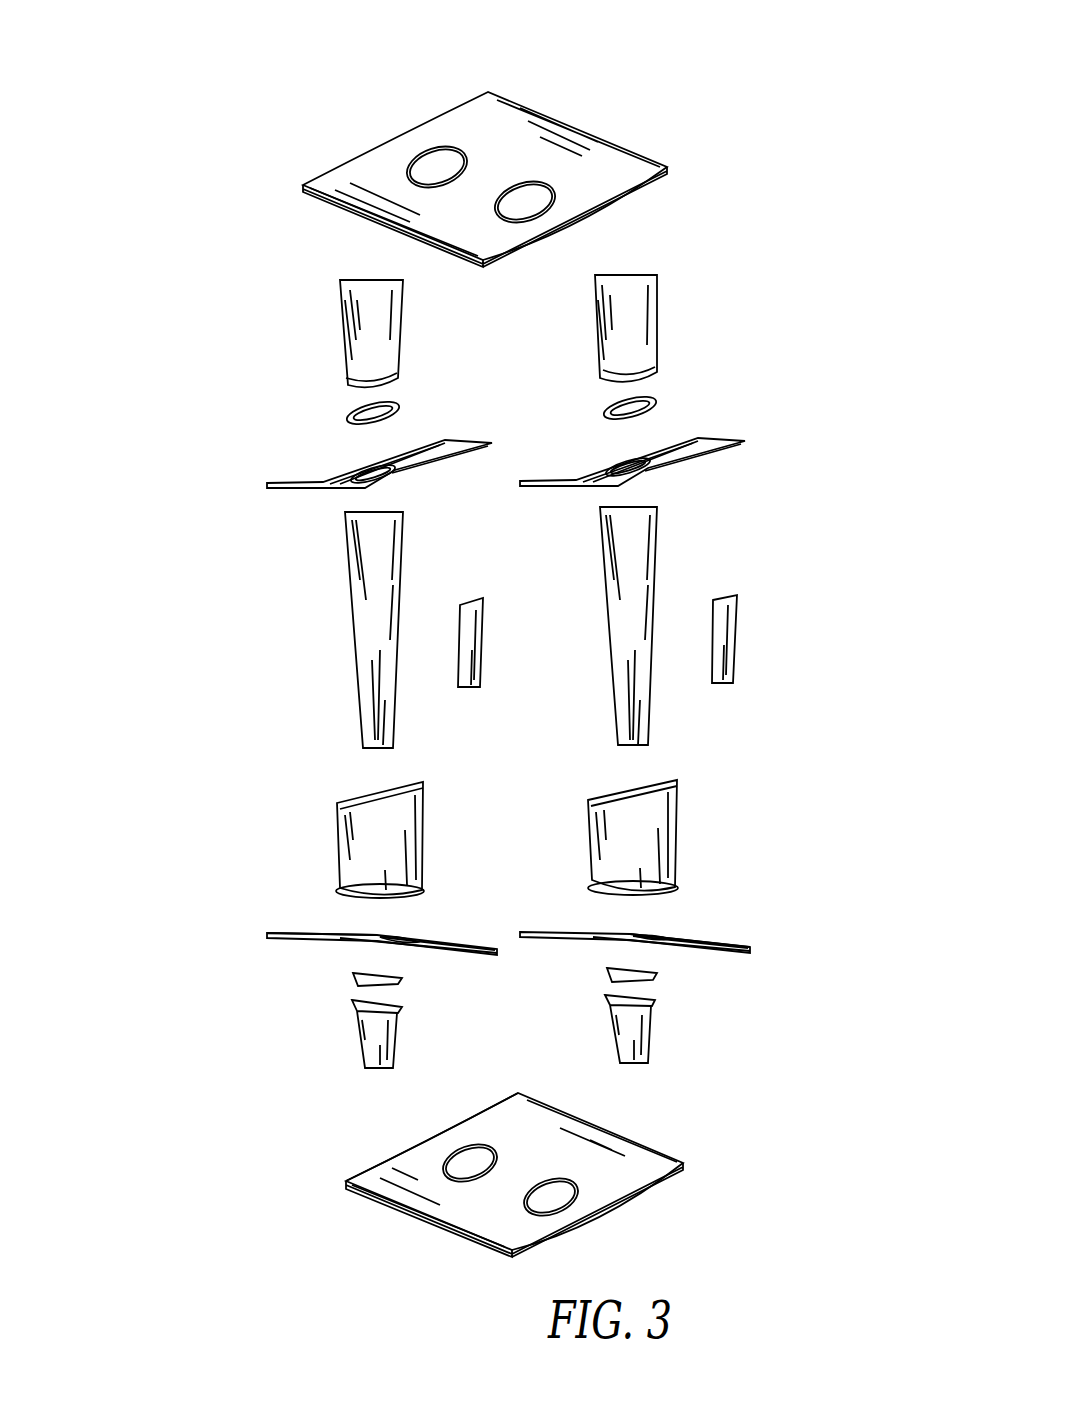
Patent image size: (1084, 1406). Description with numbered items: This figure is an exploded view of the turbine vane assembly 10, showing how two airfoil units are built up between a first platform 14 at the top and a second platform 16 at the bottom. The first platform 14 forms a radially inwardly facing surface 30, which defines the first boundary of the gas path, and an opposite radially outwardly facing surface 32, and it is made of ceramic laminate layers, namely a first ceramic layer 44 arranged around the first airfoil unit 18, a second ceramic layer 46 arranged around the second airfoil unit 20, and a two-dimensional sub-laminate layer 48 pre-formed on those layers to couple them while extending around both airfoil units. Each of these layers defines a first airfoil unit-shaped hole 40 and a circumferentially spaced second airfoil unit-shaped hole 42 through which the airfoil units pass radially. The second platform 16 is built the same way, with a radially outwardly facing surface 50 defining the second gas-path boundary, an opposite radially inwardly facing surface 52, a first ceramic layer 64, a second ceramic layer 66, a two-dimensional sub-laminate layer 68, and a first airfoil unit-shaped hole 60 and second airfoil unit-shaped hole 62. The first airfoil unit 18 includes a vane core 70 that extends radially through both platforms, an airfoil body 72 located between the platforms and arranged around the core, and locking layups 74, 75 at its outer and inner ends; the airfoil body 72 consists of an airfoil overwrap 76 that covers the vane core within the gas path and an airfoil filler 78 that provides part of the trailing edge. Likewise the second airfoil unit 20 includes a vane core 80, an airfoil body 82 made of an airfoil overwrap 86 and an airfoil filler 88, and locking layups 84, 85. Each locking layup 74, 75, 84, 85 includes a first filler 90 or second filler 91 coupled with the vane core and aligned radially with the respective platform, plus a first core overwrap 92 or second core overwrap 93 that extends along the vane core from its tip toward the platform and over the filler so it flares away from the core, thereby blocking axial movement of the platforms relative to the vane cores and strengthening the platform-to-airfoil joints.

The vane assembly 10 is at (227, 100).
The first platform 14 is at (223, 167).
The second platform 16 is at (178, 1185).
The first airfoil unit 18 is at (885, 633).
The second airfoil unit 20 is at (140, 640).
The radially inwardly facing surface 30 is at (418, 466).
The radially outwardly facing surface 32 is at (613, 180).
The first airfoil unit-shaped hole 40 is at (530, 185).
The second airfoil unit-shaped hole 42 is at (428, 168).
The first ceramic layer 44 is at (733, 428).
The second ceramic layer 46 is at (463, 437).
The 2D sub-laminate layer 48 is at (537, 154).
The radially outwardly facing surface 50 is at (437, 945).
The radially inwardly facing surface 52 is at (474, 1175).
The first airfoil unit-shaped hole 60 is at (657, 930).
The second airfoil unit-shaped hole 62 is at (379, 933).
The first ceramic layer 64 is at (708, 958).
The second ceramic layer 66 is at (317, 940).
The 2D sub-laminate layer 68 is at (383, 1213).
The vane core 70 is at (655, 613).
The airfoil body 72 is at (775, 787).
The locking layup 74 is at (737, 310).
The locking layup 75 is at (718, 1058).
The airfoil overwrap 76 is at (687, 848).
The airfoil filler 78 is at (738, 637).
The vane core 80 is at (335, 635).
The airfoil body 82 is at (475, 787).
The locking layup 84 is at (465, 312).
The locking layup 85 is at (424, 1050).
The airfoil overwrap 86 is at (423, 855).
The airfoil filler 88 is at (497, 640).
The first filler 90 is at (345, 405).
The second filler 91 is at (350, 980).
The first core overwrap 92 is at (327, 322).
The second core overwrap 93 is at (488, 1058).